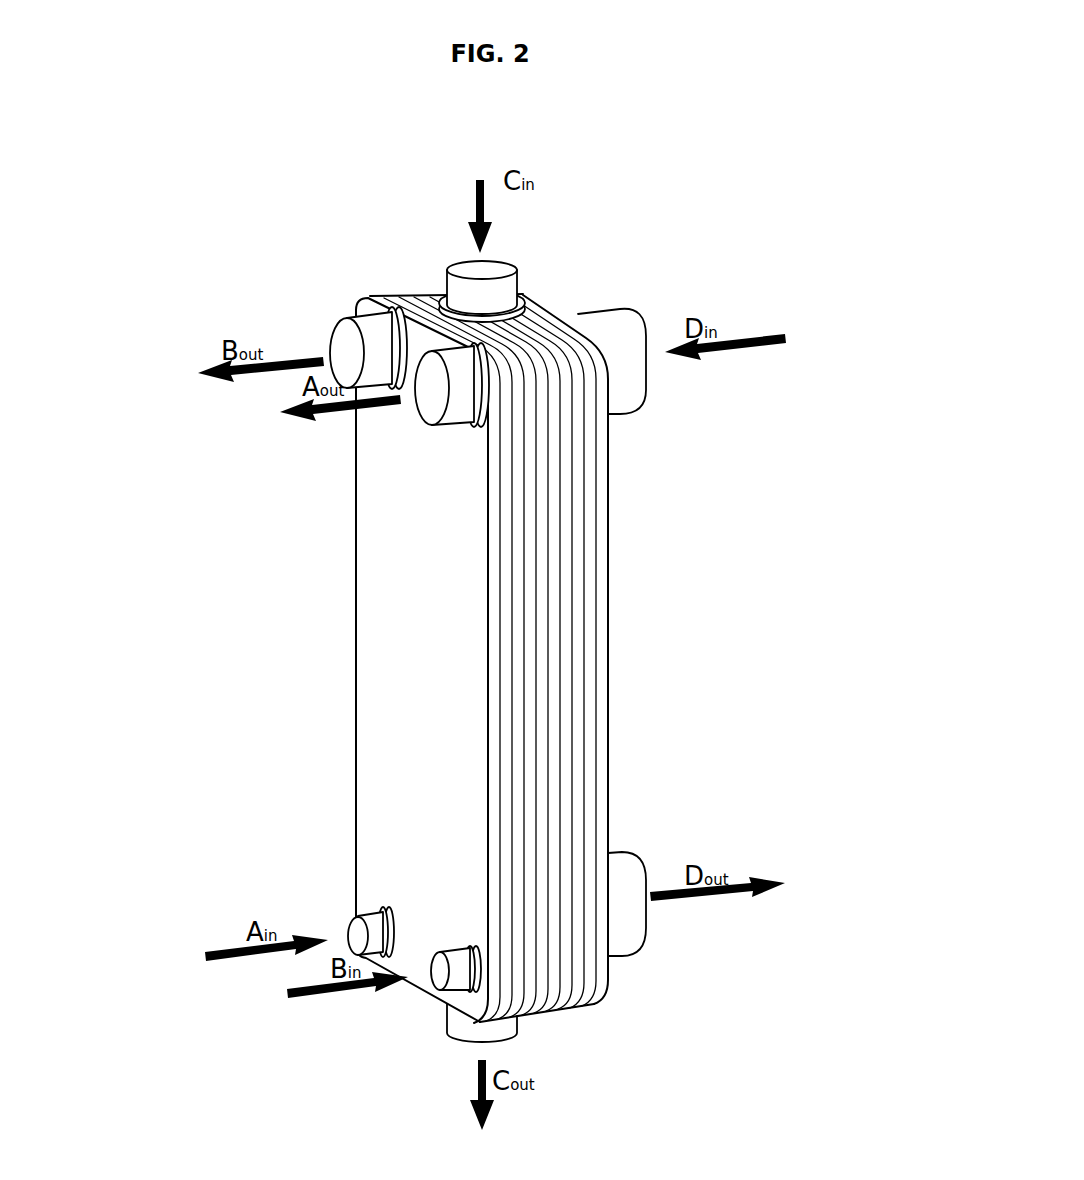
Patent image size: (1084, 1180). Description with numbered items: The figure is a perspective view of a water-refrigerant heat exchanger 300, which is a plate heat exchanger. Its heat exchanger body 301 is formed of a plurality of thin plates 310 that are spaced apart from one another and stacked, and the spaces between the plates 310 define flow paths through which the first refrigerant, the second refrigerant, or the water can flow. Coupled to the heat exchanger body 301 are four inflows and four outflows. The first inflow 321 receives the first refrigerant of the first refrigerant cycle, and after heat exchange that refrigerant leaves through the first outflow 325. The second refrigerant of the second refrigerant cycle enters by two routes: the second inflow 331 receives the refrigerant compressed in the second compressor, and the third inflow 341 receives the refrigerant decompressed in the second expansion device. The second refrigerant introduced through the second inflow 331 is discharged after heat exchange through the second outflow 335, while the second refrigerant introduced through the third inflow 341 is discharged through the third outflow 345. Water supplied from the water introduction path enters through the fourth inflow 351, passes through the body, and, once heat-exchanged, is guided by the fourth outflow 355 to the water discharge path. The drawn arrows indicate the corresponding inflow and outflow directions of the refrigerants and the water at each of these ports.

The water-refrigerant heat exchanger 300 is at (478, 609).
The heat exchanger body 301 is at (392, 626).
The plates 310 is at (552, 612).
The first inflow 321 is at (370, 920).
The first outflow 325 is at (453, 418).
The second inflow 331 is at (440, 975).
The second outflow 335 is at (362, 320).
The third inflow 341 is at (455, 284).
The third outflow 345 is at (510, 1028).
The fourth inflow 351 is at (620, 328).
The fourth outflow 355 is at (635, 928).